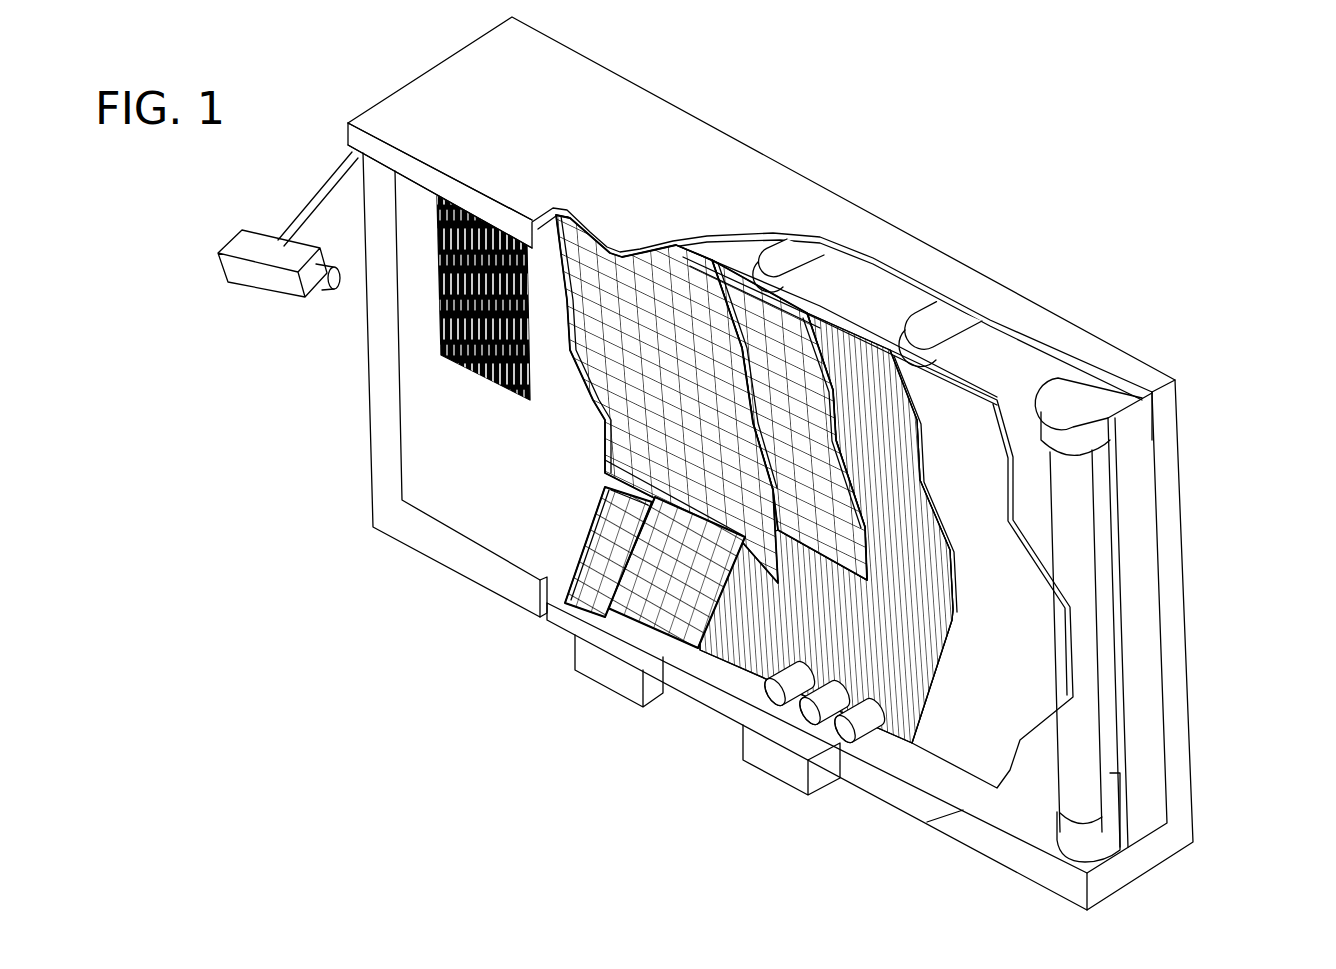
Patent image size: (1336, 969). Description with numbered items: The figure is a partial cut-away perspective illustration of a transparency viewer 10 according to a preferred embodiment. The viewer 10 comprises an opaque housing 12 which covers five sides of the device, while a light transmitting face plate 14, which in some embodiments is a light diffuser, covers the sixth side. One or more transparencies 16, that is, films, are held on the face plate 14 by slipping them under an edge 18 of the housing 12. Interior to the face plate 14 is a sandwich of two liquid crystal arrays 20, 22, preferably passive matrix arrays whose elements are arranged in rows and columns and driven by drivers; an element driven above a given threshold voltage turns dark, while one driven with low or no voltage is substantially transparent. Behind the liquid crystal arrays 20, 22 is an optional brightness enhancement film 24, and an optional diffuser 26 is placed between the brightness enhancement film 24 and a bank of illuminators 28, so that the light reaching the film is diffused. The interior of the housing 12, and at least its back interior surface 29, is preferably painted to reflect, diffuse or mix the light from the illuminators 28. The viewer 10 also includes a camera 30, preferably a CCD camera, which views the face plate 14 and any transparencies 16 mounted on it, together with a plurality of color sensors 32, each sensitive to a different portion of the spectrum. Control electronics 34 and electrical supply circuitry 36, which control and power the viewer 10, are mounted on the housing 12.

The transparency viewer 10 is at (1008, 242).
The opaque housing 12 is at (650, 135).
The face plate 14 is at (428, 463).
The transparencies 16 is at (455, 365).
The edge of housing 18 is at (458, 190).
The liquid crystal array 20 is at (750, 305).
The liquid crystal array 22 is at (650, 280).
The brightness enhancement film 24 is at (890, 718).
The diffuser 26 is at (980, 748).
The illuminators 28 is at (1065, 495).
The back interior surface 29 is at (1128, 438).
The camera 30 is at (263, 272).
The color sensors 32 is at (843, 732).
The control electronics 34 is at (588, 663).
The electrical supply circuitry 36 is at (770, 763).